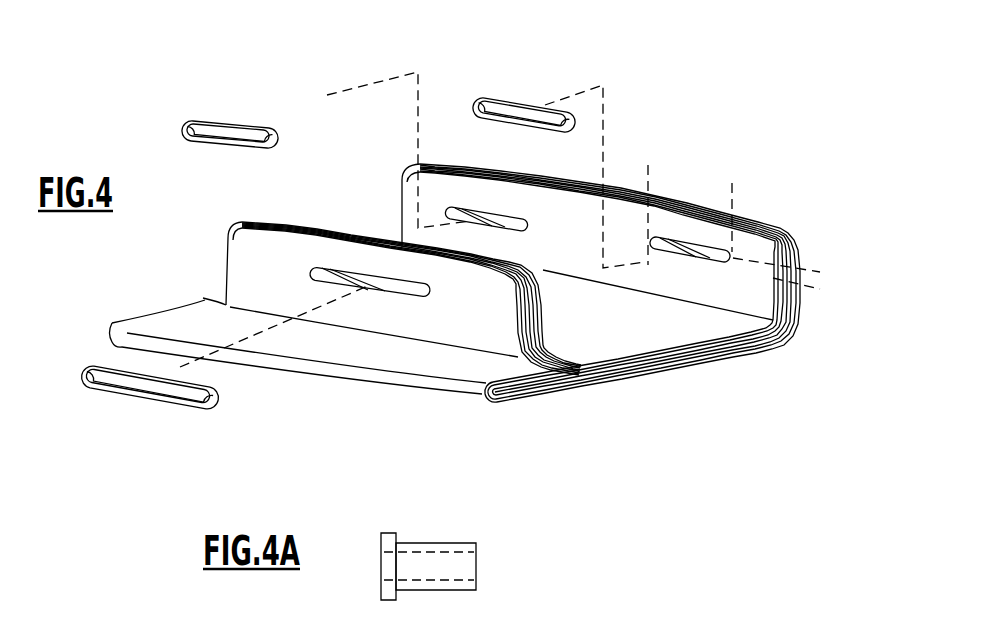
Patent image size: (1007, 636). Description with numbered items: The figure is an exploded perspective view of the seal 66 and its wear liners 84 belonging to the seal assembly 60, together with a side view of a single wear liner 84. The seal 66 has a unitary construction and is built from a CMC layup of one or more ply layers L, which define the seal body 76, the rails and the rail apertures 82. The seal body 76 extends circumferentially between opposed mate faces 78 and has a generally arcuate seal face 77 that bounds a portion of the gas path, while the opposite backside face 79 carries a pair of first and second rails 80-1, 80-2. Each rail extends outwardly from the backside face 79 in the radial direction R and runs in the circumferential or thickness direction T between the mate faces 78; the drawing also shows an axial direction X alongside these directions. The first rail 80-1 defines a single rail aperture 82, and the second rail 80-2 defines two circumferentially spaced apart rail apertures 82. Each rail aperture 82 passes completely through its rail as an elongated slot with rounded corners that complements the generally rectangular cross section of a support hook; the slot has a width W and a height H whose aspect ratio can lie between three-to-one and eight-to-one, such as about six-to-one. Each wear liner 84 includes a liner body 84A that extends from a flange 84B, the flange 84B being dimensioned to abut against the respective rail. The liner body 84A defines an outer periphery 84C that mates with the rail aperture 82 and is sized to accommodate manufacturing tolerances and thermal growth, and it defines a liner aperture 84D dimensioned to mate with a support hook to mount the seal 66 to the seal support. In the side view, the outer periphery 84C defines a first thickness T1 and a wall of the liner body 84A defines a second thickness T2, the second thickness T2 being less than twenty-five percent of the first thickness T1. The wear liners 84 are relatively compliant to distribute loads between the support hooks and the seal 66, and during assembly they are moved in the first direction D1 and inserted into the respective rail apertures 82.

In FIG. 4, the seal assembly 60 is at (185, 47).
In FIG. 4, the seal 66 is at (249, 76).
In FIG. 4, the seal body 76 is at (622, 343).
In FIG. 4, the seal face 77 is at (710, 365).
In FIG. 4, the mate faces 78 is at (160, 310).
In FIG. 4, the backside face 79 is at (725, 323).
In FIG. 4, the first rail 80-1 is at (272, 247).
In FIG. 4, the second rail 80-2 is at (413, 166).
In FIG. 4, the rail aperture 82 is at (362, 282).
In FIG. 4, the wear liner 84 is at (193, 117).
In FIG. 4A, the wear liner 84 is at (371, 504).
In FIG. 4, the liner body 84A is at (217, 113).
In FIG. 4A, the liner body 84A is at (477, 565).
In FIG. 4, the flange 84B is at (213, 150).
In FIG. 4A, the flange 84B is at (381, 548).
In FIG. 4, the outer periphery 84C is at (240, 118).
In FIG. 4A, the outer periphery 84C is at (447, 543).
In FIG. 4, the liner aperture 84D is at (260, 143).
In FIG. 4A, the liner aperture 84D is at (447, 568).
In FIG. 4, the ply layers L is at (539, 307).
In FIG. 4, the height H is at (818, 313).
In FIG. 4, the width W is at (613, 170).
In FIG. 4, the first direction D1 is at (715, 420).
In FIG. 4A, the first thickness T1 is at (423, 610).
In FIG. 4A, the second thickness T2 is at (408, 570).
In FIG. 4, the radial direction R is at (690, 130).
In FIG. 4, the axial direction X is at (690, 130).
In FIG. 4, the thickness direction T is at (690, 130).